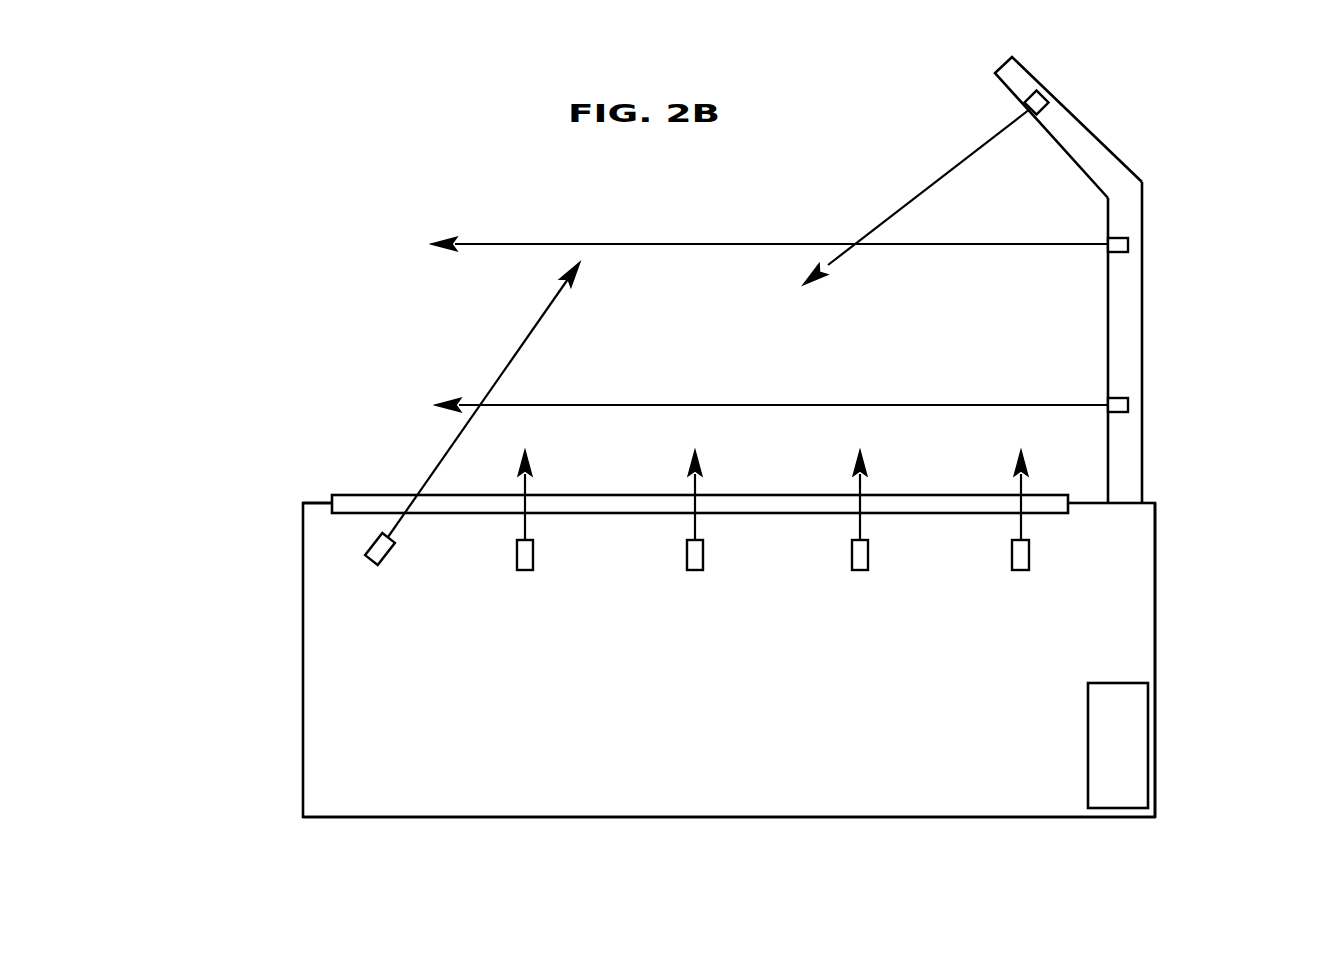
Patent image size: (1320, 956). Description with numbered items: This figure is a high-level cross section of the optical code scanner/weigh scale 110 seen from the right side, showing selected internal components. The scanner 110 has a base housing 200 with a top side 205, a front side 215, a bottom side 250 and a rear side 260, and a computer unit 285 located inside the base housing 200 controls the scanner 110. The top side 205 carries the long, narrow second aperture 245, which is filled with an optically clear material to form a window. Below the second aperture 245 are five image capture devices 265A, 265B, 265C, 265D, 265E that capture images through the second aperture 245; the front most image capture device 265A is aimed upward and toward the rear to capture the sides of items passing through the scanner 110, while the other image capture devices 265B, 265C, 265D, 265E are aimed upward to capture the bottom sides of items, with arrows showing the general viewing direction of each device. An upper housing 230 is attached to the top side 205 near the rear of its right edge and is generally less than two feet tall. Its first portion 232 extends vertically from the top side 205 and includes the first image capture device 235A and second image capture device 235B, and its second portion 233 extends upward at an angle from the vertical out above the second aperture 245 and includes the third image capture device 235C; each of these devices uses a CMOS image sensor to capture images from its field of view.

The optical code scanner/weigh scale 110 is at (333, 127).
The base housing 200 is at (215, 757).
The top side 205 is at (318, 502).
The front side 215 is at (303, 598).
The upper housing 230 is at (863, 274).
The first portion 232 is at (1143, 334).
The second portion 233 is at (1093, 128).
The first image capture device 235A is at (1128, 406).
The second image capture device 235B is at (1128, 244).
The third image capture device 235C is at (1048, 93).
The second aperture 245 is at (370, 495).
The bottom side 250 is at (405, 817).
The rear side 260 is at (1155, 614).
The front most image capture device 265A is at (392, 564).
The image capture device 265B is at (525, 570).
The image capture device 265C is at (695, 570).
The image capture device 265D is at (860, 570).
The image capture device 265E is at (1021, 570).
The computer unit 285 is at (1132, 748).